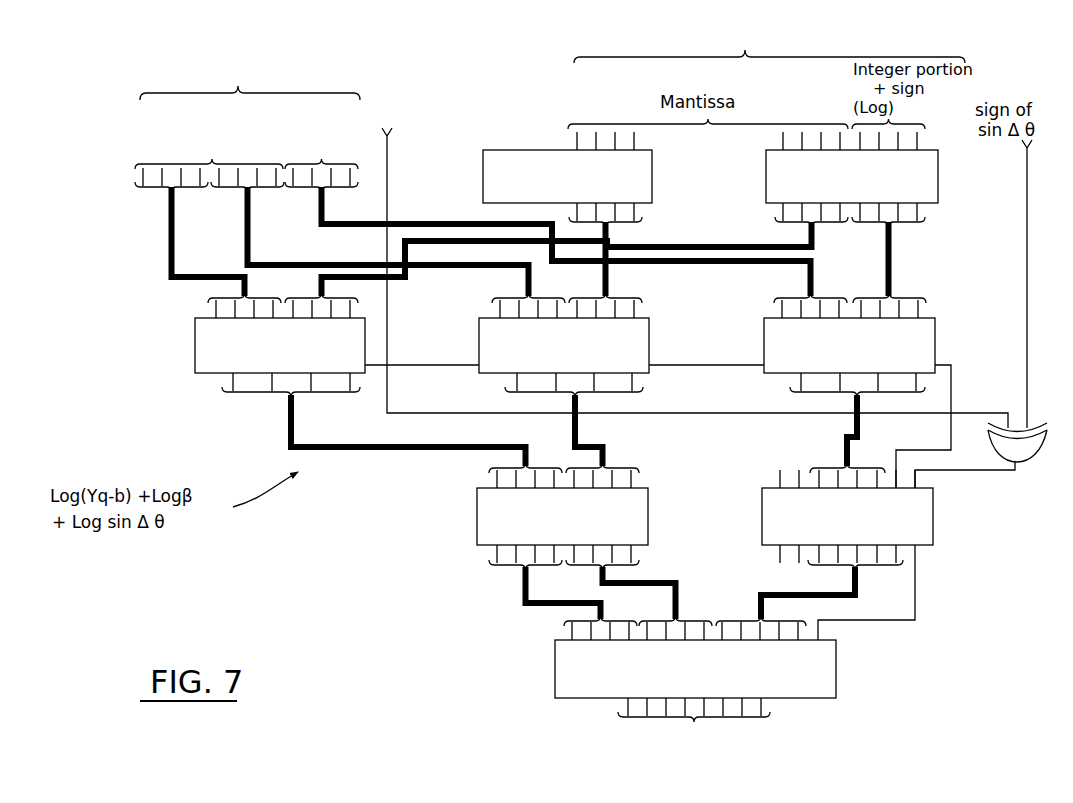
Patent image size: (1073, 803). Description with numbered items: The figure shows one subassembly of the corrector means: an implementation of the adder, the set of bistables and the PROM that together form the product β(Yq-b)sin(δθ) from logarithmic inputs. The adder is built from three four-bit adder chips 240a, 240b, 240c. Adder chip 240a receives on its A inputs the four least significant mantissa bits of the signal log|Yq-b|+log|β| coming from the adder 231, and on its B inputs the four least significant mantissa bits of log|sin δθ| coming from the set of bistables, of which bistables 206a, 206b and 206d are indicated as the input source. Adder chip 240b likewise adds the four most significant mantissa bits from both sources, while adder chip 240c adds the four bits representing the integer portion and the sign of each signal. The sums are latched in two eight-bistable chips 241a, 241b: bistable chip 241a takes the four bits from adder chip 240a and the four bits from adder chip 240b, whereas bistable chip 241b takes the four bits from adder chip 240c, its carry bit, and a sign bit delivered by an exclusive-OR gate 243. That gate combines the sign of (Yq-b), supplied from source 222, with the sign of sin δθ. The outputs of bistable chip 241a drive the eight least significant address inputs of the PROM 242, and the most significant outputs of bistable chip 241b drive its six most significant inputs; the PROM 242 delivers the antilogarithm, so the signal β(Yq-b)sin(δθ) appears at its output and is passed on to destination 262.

The bistable 206a is at (771, 37).
The bistable chip 206b is at (658, 177).
The bistable chip 206d is at (946, 179).
The sign signal source 222 is at (695, 257).
The adder 231 is at (252, 108).
The 4-bit adder chip 240a is at (192, 350).
The 4-bit adder chip 240b is at (478, 350).
The 4-bit adder chip 240c is at (762, 350).
The 8-bistable chip 241a is at (472, 518).
The 8-bistable chip 241b is at (942, 524).
The PROM 242 is at (552, 668).
The exclusive-OR gate 243 is at (1035, 462).
The output destination 262 is at (678, 761).